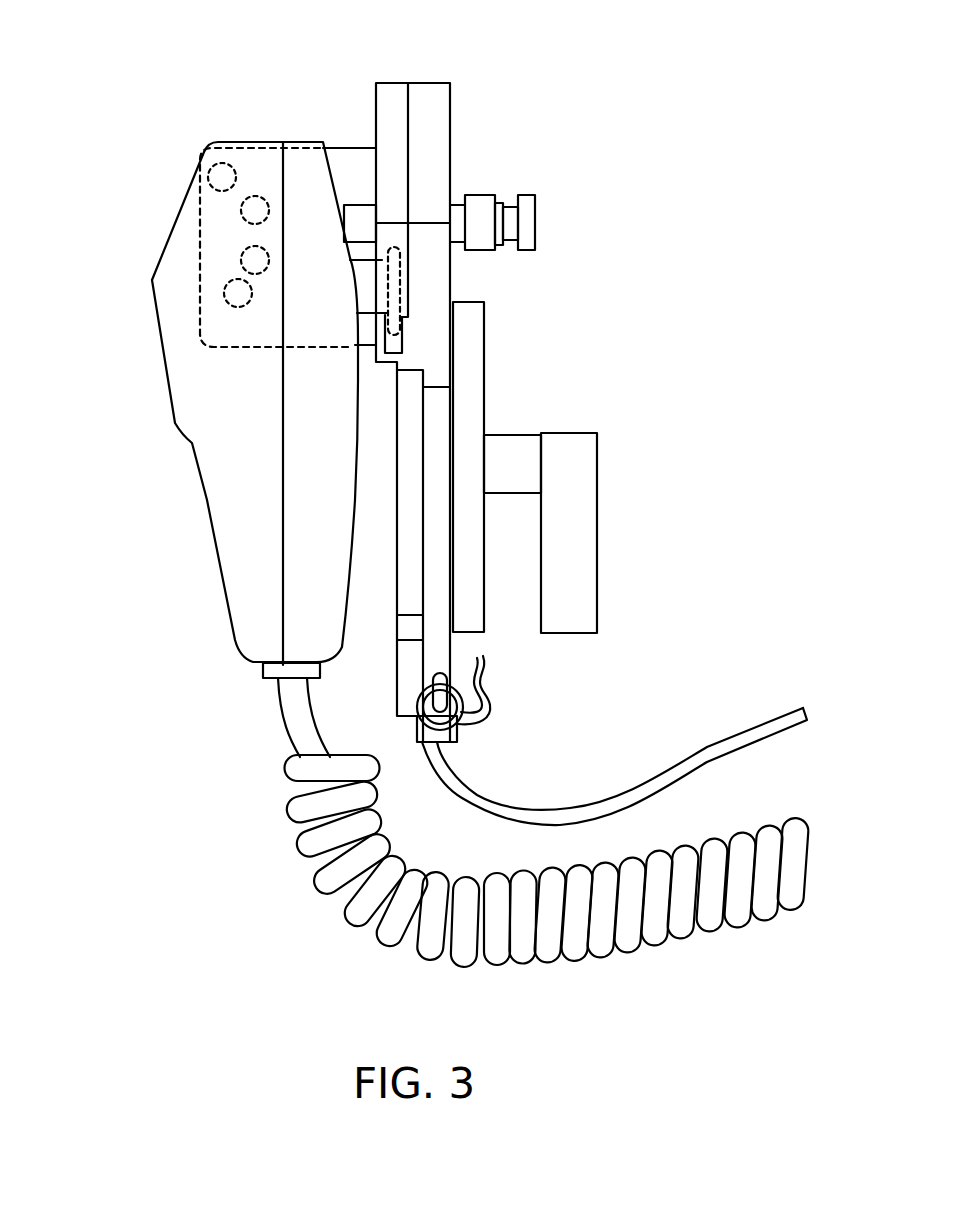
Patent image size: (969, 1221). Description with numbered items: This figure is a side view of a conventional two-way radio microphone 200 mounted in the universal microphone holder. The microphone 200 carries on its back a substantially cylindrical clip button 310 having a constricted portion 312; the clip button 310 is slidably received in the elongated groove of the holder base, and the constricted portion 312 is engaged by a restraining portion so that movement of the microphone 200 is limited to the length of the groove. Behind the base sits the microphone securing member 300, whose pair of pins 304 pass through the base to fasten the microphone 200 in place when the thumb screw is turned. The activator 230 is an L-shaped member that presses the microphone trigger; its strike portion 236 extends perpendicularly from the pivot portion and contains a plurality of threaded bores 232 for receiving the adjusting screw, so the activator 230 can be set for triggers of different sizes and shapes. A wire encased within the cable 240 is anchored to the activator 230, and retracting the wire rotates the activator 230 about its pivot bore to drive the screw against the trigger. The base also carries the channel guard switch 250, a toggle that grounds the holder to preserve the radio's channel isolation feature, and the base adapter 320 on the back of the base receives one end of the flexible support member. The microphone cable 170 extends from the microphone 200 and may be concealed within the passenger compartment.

The microphone cable 170 is at (315, 890).
The microphone 200 is at (158, 333).
The activator 230 is at (397, 512).
The threaded bores 232 is at (213, 166).
The strike portion 236 is at (343, 148).
The cable 240 is at (580, 781).
The channel guard/private line switch 250 is at (490, 700).
The microphone securing member 300 is at (477, 195).
The pins 304 is at (367, 205).
The clip button 310 is at (400, 267).
The constricted portion 312 is at (367, 278).
The base adapter 320 is at (598, 525).